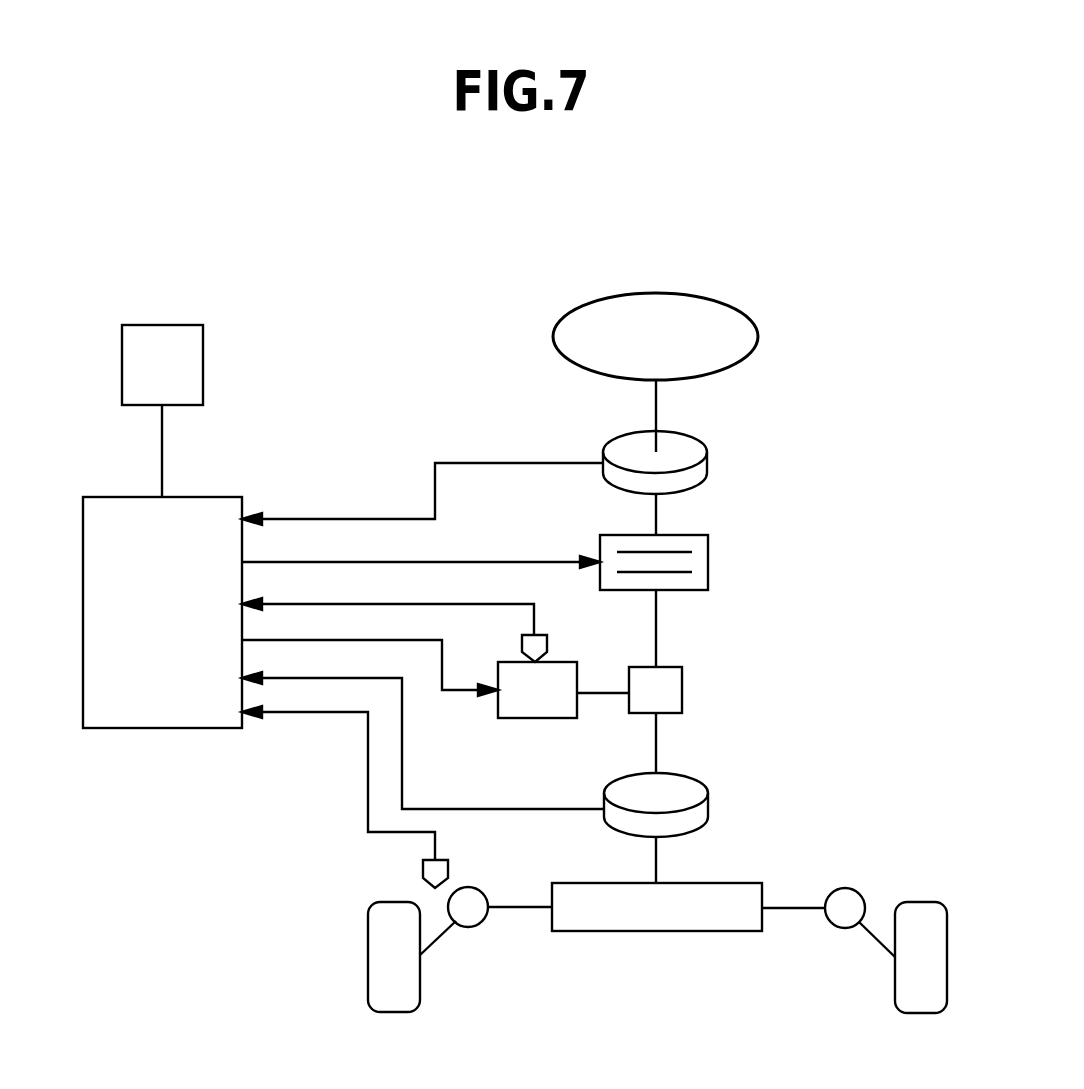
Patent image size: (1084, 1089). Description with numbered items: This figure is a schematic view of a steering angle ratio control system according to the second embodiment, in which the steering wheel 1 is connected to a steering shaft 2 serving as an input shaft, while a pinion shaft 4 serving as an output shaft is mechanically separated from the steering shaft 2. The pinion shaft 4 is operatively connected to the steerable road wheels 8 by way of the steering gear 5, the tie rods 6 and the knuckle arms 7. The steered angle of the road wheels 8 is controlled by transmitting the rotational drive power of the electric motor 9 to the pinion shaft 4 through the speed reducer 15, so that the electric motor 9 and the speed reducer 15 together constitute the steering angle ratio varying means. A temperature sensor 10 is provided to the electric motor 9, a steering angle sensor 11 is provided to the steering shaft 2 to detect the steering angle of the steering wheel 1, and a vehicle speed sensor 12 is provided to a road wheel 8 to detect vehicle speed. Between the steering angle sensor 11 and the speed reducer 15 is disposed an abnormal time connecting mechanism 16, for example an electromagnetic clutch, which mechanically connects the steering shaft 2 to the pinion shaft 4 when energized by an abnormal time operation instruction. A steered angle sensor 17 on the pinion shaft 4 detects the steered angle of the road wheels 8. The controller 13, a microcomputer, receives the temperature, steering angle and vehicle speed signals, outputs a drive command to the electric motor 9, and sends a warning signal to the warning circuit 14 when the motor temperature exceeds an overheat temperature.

The steering wheel 1 is at (745, 335).
The steering shaft 2 is at (656, 405).
The pinion shaft 4 is at (656, 750).
The steering gear 5 is at (662, 933).
The tie rods 6 is at (520, 910).
The knuckle arms 7 is at (438, 938).
The steerable road wheels 8 is at (388, 910).
The electric motor 9 is at (538, 718).
The temperature sensor 10 is at (540, 645).
The steering angle sensor 11 is at (698, 451).
The vehicle speed sensor 12 is at (448, 868).
The controller 13 is at (170, 718).
The warning circuit 14 is at (162, 334).
The speed reducer 15 is at (682, 688).
The abnormal time connecting mechanism 16 is at (708, 557).
The steered angle sensor 17 is at (697, 793).